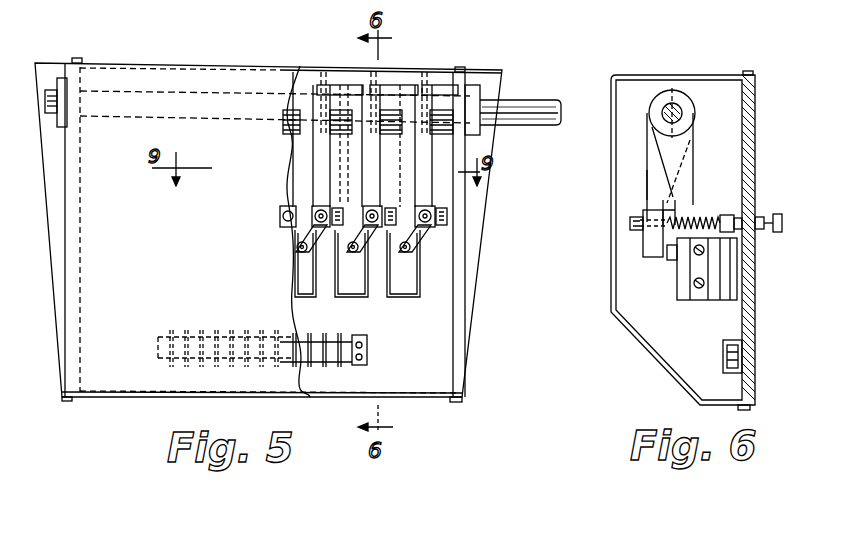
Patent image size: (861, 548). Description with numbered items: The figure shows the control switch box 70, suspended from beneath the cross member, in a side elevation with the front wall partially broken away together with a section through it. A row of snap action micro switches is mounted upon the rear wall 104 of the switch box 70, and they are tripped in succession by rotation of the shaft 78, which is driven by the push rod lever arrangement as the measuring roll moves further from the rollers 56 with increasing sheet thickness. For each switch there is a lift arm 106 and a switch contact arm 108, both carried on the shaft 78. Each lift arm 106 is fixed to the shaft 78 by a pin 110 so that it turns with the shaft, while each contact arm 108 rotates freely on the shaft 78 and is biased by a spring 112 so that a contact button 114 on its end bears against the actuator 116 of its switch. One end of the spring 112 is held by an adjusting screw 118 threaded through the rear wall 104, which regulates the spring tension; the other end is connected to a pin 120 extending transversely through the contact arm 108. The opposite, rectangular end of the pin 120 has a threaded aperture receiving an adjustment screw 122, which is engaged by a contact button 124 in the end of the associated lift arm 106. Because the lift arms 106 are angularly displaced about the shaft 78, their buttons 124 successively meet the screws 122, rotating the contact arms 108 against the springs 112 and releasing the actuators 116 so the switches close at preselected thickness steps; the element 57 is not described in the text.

In FIG. 5, the switch box 70 is at (146, 400).
In FIG. 6, the switch box 70 is at (647, 361).
In FIG. 5, the shaft 78 is at (521, 106).
In FIG. 6, the shaft 78 is at (678, 105).
In FIG. 5, the pin 110 is at (352, 83).
In FIG. 6, the pin 110 is at (660, 90).
In FIG. 5, the switch contact arm 108 is at (397, 86).
In FIG. 6, the switch contact arm 108 is at (650, 184).
In FIG. 5, the lift arm 106 is at (323, 160).
In FIG. 6, the lift arm 106 is at (680, 176).
In FIG. 5, the spring 112 is at (281, 206).
In FIG. 6, the spring 112 is at (717, 205).
In FIG. 5, the adjustment screw 122 is at (290, 228).
In FIG. 6, the adjustment screw 122 is at (630, 223).
In FIG. 5, the pin 120 is at (340, 192).
In FIG. 6, the pin 120 is at (647, 233).
In FIG. 5, the rollers 56 is at (300, 275).
In FIG. 5, the bracket 57 is at (352, 283).
In FIG. 6, the bracket 57 is at (718, 265).
In FIG. 5, the rear wall 104 is at (345, 375).
In FIG. 6, the rear wall 104 is at (742, 325).
In FIG. 6, the contact button 114 is at (665, 257).
In FIG. 6, the actuator 116 is at (672, 262).
In FIG. 6, the adjusting screw 118 is at (784, 216).
In FIG. 6, the contact button 124 is at (643, 213).